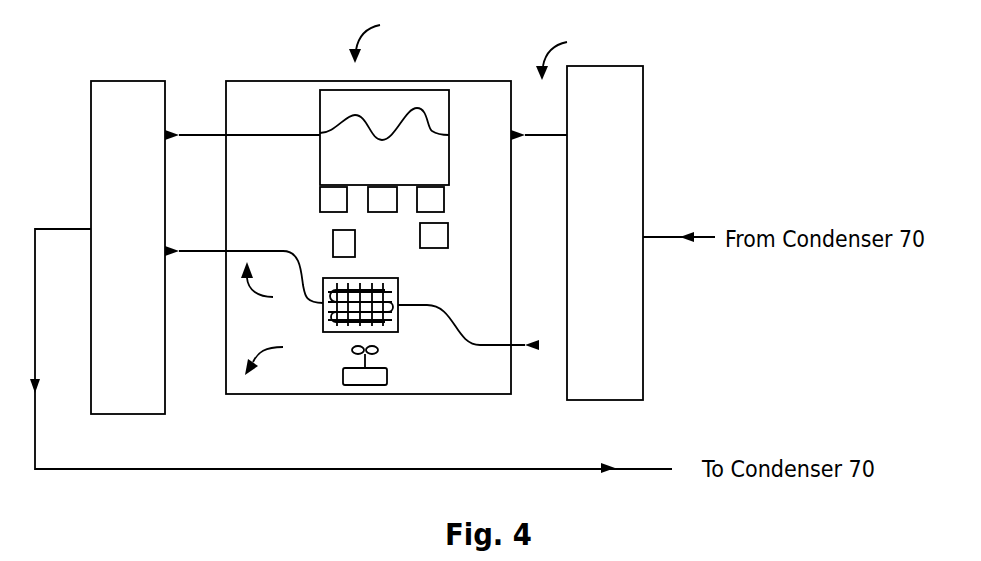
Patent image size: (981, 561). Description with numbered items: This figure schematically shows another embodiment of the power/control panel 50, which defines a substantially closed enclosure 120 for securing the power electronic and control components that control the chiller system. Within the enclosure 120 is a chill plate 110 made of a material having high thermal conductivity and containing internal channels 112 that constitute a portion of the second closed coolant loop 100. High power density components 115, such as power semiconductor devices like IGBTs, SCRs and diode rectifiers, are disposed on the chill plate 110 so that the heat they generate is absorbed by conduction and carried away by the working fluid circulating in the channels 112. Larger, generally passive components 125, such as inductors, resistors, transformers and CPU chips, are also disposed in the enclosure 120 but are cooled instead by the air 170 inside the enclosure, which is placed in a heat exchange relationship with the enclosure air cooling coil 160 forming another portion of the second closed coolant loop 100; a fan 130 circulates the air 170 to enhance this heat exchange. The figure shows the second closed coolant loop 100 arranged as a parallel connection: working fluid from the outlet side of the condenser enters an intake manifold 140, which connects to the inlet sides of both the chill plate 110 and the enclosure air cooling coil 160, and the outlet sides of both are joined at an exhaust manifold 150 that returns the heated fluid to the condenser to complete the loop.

The power/control panel 50 is at (383, 44).
The second closed coolant loop 100 is at (555, 47).
The chill plate 110 is at (320, 107).
The internal channels 112 is at (431, 117).
The components 115 is at (444, 200).
The enclosure 120 is at (285, 193).
The components 125 is at (448, 238).
The fan 130 is at (372, 377).
The intake manifold 140 is at (602, 63).
The exhaust manifold 150 is at (112, 78).
The enclosure air cooling coil 160 is at (400, 293).
The air 170 is at (264, 344).